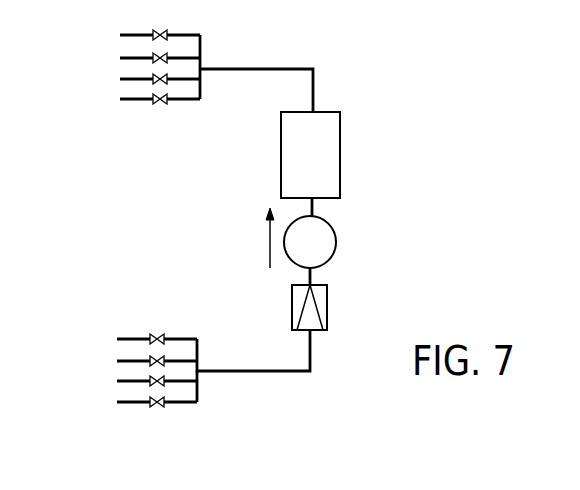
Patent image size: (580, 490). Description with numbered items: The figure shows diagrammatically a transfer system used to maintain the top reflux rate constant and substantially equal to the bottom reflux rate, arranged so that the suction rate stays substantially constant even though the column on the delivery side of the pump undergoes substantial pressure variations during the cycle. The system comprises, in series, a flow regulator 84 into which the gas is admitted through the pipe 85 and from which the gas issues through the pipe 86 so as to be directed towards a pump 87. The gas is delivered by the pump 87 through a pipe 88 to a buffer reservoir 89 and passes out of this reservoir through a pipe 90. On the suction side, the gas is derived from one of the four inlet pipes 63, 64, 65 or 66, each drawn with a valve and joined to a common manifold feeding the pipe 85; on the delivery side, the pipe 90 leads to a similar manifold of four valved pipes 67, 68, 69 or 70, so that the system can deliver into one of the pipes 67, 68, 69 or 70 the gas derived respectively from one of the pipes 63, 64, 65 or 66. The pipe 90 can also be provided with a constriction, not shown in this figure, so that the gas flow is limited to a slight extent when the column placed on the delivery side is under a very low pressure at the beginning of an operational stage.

The pipe 63 is at (117, 402).
The pipe 64 is at (117, 381).
The pipe 65 is at (117, 361).
The pipe 66 is at (117, 339).
The pipe 67 is at (120, 99).
The pipe 68 is at (120, 79).
The pipe 69 is at (120, 58).
The pipe 70 is at (120, 35).
The flow regulator 84 is at (298, 320).
The pipe 85 is at (312, 353).
The pipe 86 is at (313, 277).
The pump 87 is at (327, 243).
The pipe 88 is at (312, 207).
The buffer reservoir 89 is at (328, 127).
The pipe 90 is at (313, 69).